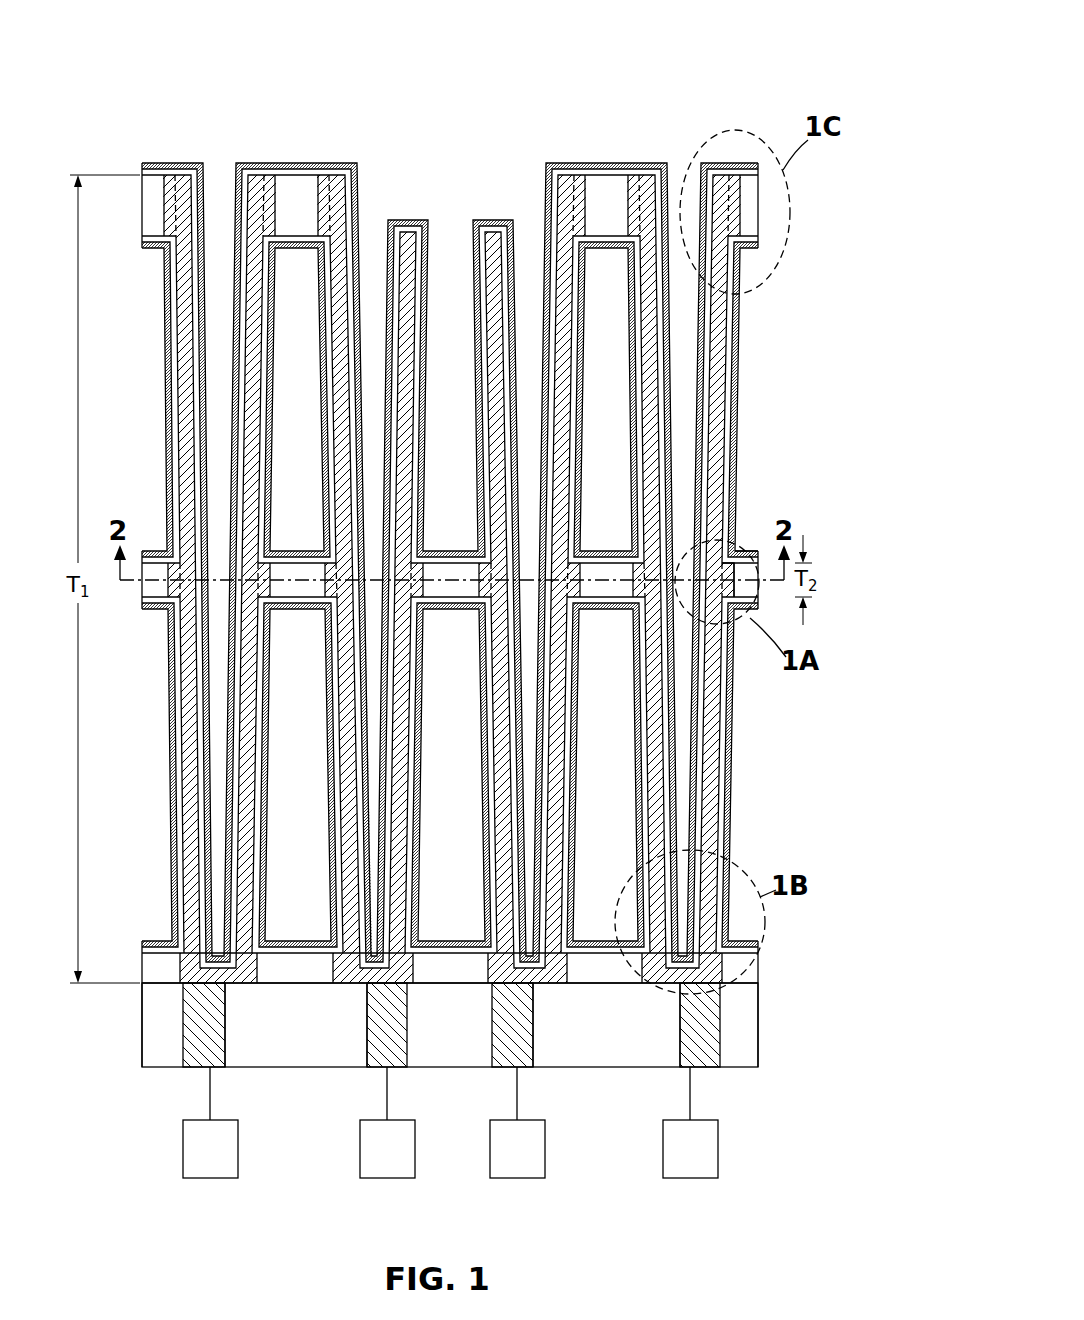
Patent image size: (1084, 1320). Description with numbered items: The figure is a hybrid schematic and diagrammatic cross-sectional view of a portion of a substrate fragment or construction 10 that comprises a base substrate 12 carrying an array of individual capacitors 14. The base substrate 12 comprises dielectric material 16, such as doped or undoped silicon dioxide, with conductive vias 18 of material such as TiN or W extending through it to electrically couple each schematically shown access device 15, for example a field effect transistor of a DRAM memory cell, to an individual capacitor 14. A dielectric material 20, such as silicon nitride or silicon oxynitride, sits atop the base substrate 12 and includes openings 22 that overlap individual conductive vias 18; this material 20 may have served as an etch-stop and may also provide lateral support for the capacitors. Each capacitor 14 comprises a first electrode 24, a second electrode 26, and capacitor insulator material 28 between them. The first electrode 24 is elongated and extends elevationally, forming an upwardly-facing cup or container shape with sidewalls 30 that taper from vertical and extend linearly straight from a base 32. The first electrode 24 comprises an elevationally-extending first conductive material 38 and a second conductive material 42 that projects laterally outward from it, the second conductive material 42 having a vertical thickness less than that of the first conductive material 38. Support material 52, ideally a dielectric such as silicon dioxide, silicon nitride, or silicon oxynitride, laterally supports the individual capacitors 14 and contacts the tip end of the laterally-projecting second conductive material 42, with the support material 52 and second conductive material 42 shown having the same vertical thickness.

The substrate fragment or construction 10 is at (767, 73).
The base substrate 12 is at (763, 1020).
The capacitor 14 is at (218, 155).
The access device 15 is at (450, 1122).
The dielectric material 16 is at (450, 1025).
The conductive via 18 is at (200, 1015).
The dielectric material 20 is at (160, 966).
The opening 22 is at (264, 963).
The first electrode 24 is at (453, 603).
The second electrode 26 is at (161, 163).
The capacitor insulator material 28 is at (732, 363).
The sidewall 30 is at (423, 320).
The base 32 is at (228, 972).
The first conductive material 38 is at (722, 568).
The second conductive material 42 is at (735, 552).
The support material 52 is at (296, 195).